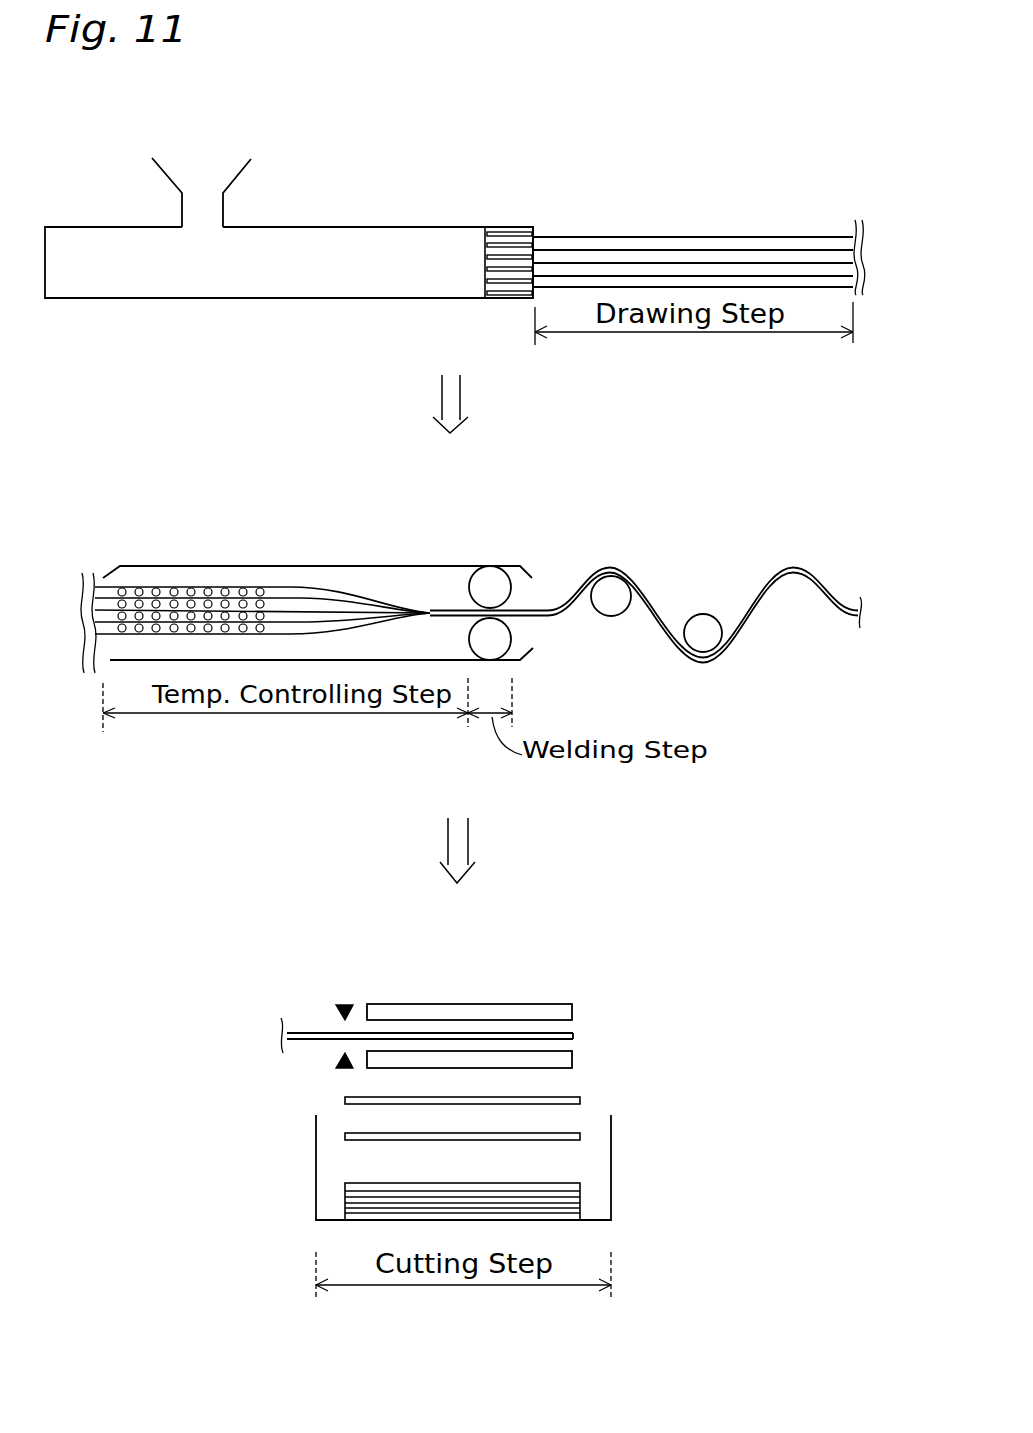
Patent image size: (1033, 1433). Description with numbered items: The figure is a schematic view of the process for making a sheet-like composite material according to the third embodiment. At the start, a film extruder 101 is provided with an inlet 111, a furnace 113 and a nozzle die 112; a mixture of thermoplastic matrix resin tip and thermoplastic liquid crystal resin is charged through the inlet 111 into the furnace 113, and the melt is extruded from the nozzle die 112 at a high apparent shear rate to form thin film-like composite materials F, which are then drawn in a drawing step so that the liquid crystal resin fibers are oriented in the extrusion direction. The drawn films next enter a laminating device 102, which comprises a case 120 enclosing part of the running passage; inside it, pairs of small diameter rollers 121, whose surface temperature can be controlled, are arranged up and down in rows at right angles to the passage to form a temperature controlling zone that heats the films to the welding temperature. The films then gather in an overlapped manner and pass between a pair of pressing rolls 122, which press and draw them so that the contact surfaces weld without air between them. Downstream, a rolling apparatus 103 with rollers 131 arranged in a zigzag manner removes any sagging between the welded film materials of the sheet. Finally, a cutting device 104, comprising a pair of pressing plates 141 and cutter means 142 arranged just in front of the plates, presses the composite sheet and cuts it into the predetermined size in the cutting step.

The film extruder 101 is at (326, 215).
The inlet 111 is at (229, 156).
The furnace 113 is at (395, 227).
The nozzle die 112 is at (502, 307).
The filaments F is at (618, 237).
The laminating device 102 is at (274, 571).
The case 120 is at (403, 565).
The small diameter rollers 121 is at (123, 587).
The pressing rolls 122 is at (490, 572).
The rolling apparatus 103 is at (646, 569).
The guide rollers 131 is at (688, 633).
The cutting device 104 is at (471, 1053).
The pressing plates 141 is at (558, 1012).
The cutter means 142 is at (342, 1002).